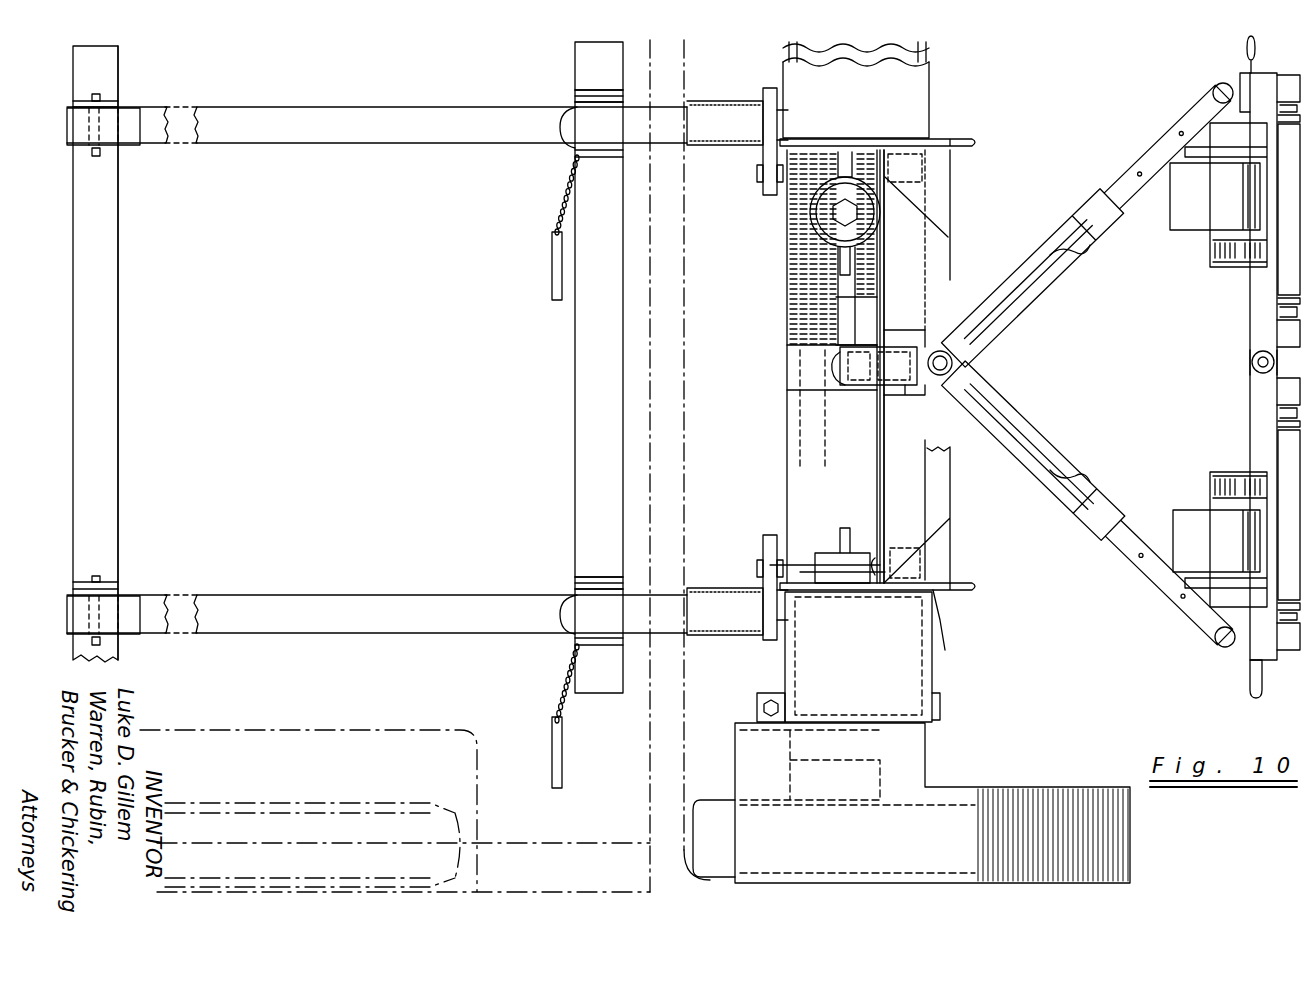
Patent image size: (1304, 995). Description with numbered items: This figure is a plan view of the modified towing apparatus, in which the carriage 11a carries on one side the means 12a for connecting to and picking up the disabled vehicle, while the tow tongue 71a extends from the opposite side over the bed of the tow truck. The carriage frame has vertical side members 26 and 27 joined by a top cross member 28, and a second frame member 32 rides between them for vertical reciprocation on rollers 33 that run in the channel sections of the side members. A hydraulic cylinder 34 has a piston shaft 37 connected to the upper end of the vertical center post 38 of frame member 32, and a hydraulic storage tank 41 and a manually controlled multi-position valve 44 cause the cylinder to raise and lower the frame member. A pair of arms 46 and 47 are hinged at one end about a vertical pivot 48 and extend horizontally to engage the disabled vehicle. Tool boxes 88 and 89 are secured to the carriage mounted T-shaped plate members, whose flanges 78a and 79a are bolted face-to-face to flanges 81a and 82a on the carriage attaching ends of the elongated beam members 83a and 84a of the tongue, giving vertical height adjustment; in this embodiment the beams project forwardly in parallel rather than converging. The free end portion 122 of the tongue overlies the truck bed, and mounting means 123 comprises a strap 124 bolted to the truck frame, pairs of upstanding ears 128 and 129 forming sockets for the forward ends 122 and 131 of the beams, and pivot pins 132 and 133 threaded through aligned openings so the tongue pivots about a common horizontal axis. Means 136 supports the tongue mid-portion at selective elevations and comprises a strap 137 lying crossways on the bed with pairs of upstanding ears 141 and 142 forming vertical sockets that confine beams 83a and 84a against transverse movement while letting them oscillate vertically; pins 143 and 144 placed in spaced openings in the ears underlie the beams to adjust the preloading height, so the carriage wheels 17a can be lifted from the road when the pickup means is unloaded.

The carriage 11a is at (990, 200).
The means for connection to and picking up of the disabled vehicle 12a is at (1148, 620).
The carriage wheel 17a is at (702, 877).
The vertical side member 26 is at (952, 620).
The vertical side member 27 is at (912, 139).
The top cross member 28 is at (935, 258).
The second frame member 32 is at (884, 475).
The roller 33 is at (922, 165).
The hydraulic cylinder 34 is at (835, 375).
The piston shaft 37 is at (840, 362).
The vertical center post 38 is at (905, 395).
The hydraulic storage tank 41 is at (828, 208).
The manually controlled multi-position valve 44 is at (845, 545).
The arm 46 is at (1100, 520).
The arm 47 is at (1082, 232).
The vertical pivot 48 is at (942, 350).
The tow tongue 71a is at (432, 147).
The flange 78a is at (768, 584).
The flange 79a is at (768, 153).
The flange 81a is at (768, 555).
The flange 82a is at (763, 190).
The beam member 83a is at (335, 595).
The beam member 84a is at (350, 145).
The tool box 88 is at (778, 669).
The tool box 89 is at (935, 77).
The free end portion 122 is at (73, 618).
The mounting means 123 is at (84, 178).
The strap 124 is at (120, 445).
The upstanding ear 128 is at (118, 593).
The upstanding ear 129 is at (118, 104).
The forward end 131 is at (73, 132).
The pivot pin 132 is at (96, 576).
The pivot pin 133 is at (98, 156).
The means for supporting a mid-portion of the tow tongue 136 is at (630, 97).
The strap 137 is at (575, 430).
The upstanding ear 141 is at (575, 637).
The upstanding ear 142 is at (575, 150).
The pin 143 is at (552, 752).
The pin 144 is at (552, 272).